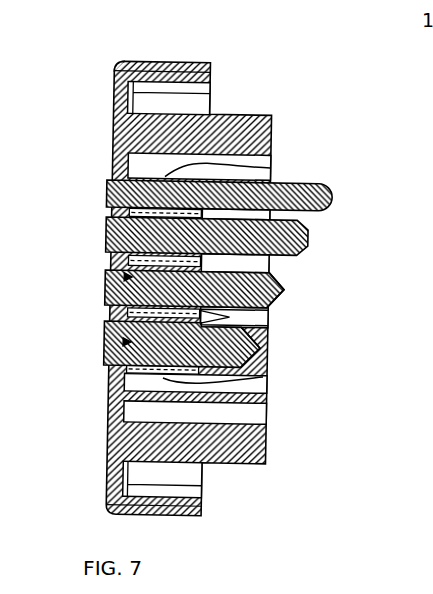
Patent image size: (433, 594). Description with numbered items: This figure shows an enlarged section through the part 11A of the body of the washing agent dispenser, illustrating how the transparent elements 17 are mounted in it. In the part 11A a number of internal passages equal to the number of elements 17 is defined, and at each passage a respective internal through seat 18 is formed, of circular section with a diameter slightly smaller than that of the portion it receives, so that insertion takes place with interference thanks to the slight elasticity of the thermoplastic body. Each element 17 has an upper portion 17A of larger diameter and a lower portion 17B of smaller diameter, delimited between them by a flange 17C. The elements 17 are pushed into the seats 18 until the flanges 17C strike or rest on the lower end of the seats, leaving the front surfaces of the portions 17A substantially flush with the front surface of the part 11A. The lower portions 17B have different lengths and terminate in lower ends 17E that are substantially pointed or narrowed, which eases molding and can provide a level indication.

The part of the body 11A is at (252, 120).
The transparent element 17 is at (105, 288).
The upper portion 17A is at (103, 275).
The lower portion 17B is at (269, 264).
The flange 17C is at (231, 316).
The lower end 17E is at (268, 346).
The internal through seat 18 is at (272, 168).